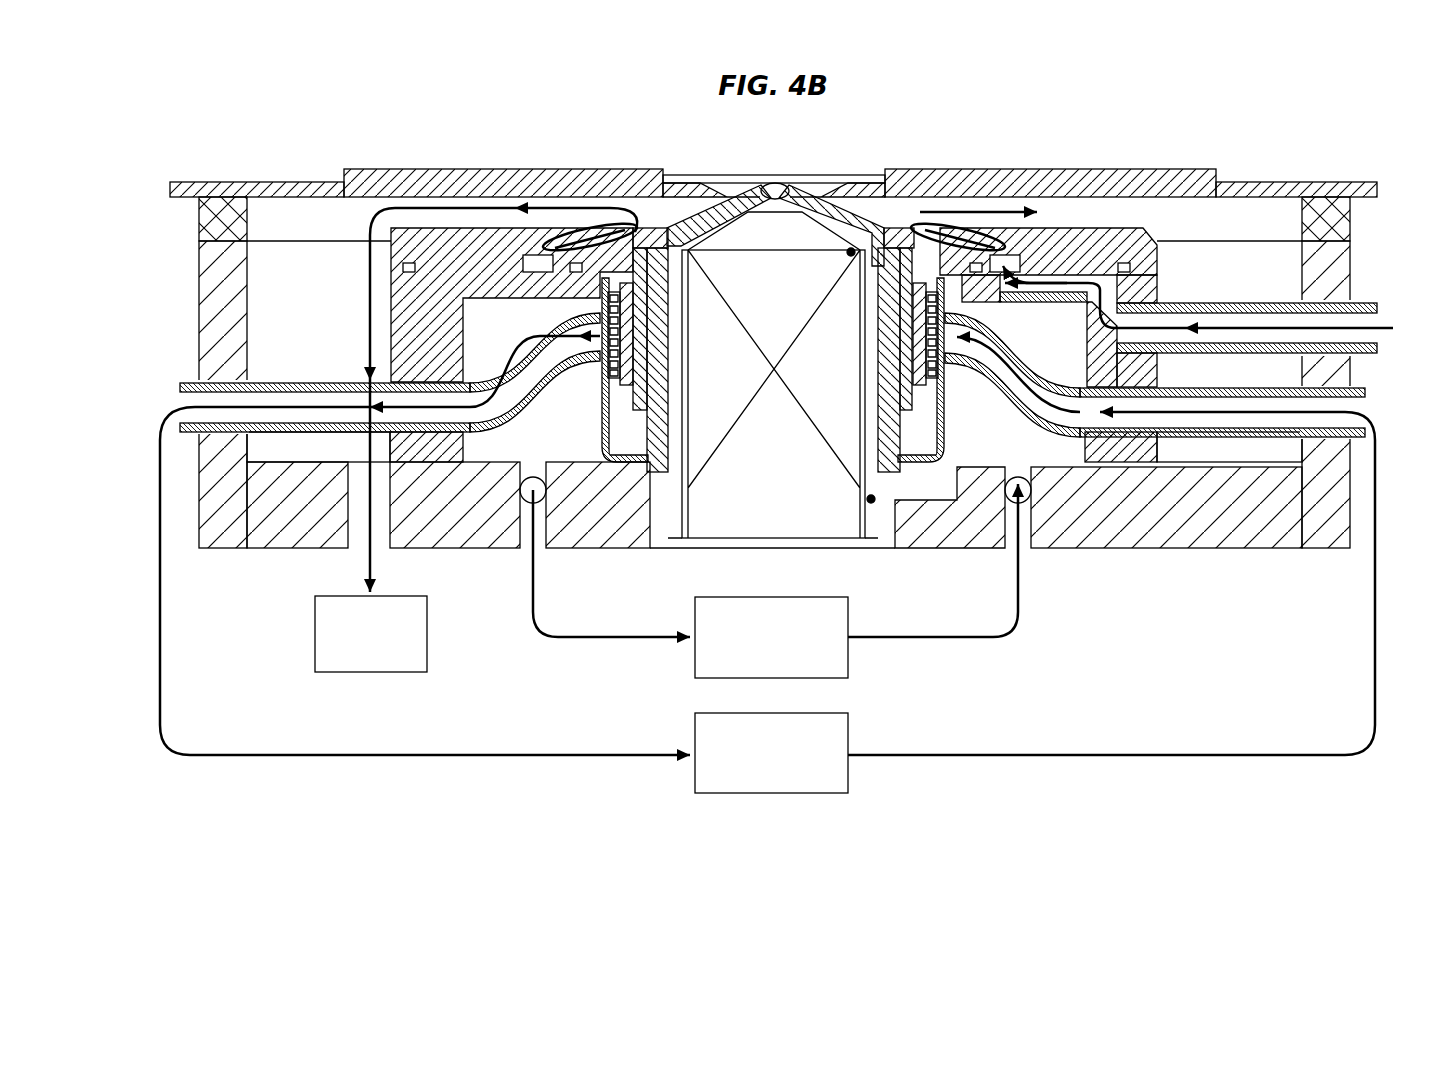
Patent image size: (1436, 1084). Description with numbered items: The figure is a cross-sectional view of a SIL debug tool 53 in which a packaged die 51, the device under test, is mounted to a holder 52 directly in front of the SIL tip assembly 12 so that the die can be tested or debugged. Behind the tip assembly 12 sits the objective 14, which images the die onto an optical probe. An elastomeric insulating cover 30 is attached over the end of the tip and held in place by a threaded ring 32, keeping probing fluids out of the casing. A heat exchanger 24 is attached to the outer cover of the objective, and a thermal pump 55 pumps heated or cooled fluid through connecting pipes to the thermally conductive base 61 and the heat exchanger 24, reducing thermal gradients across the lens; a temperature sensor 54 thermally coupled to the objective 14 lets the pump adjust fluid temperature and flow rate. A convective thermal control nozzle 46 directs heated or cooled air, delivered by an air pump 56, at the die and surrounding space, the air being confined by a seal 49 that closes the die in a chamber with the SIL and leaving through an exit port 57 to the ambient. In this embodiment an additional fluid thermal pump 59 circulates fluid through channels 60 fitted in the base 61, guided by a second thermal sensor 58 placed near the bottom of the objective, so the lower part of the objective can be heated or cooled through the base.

The tip assembly 12 is at (860, 220).
The objective 14 is at (760, 487).
The heat exchanger 24 is at (880, 318).
The insulating cover 30 is at (602, 395).
The threaded ring 32 is at (638, 240).
The convective thermal control nozzle 46 is at (538, 272).
The seal 49 is at (199, 232).
The packaged die 51 is at (735, 175).
The holder 52 is at (400, 169).
The SIL debug tool 53 is at (1305, 143).
The temperature sensor 54 is at (846, 254).
The thermal pump 55 is at (695, 717).
The air pump 56 is at (1380, 305).
The exit port 57 is at (315, 652).
The second thermal sensor 58 is at (866, 499).
The fluid thermal pump 59 is at (848, 665).
The channels 60 is at (520, 545).
The base 61 is at (270, 540).